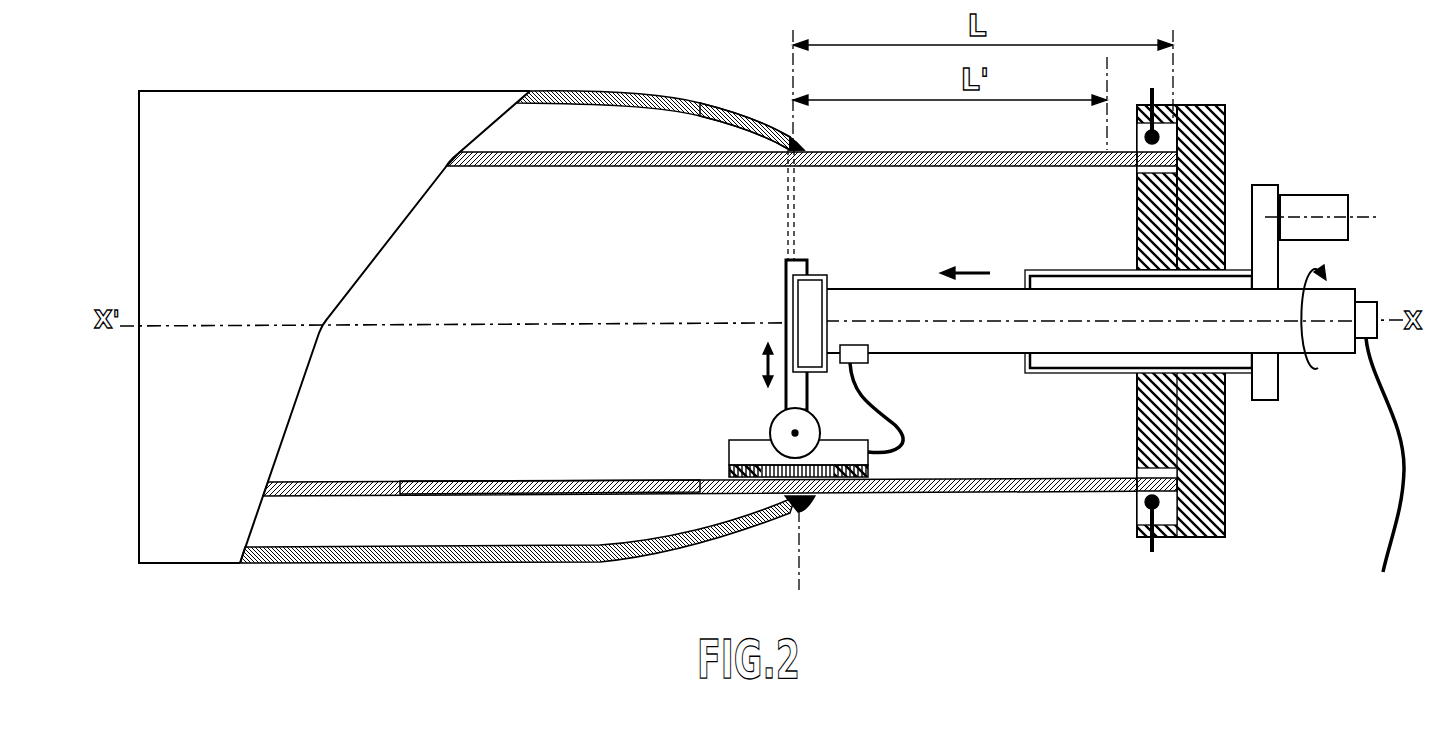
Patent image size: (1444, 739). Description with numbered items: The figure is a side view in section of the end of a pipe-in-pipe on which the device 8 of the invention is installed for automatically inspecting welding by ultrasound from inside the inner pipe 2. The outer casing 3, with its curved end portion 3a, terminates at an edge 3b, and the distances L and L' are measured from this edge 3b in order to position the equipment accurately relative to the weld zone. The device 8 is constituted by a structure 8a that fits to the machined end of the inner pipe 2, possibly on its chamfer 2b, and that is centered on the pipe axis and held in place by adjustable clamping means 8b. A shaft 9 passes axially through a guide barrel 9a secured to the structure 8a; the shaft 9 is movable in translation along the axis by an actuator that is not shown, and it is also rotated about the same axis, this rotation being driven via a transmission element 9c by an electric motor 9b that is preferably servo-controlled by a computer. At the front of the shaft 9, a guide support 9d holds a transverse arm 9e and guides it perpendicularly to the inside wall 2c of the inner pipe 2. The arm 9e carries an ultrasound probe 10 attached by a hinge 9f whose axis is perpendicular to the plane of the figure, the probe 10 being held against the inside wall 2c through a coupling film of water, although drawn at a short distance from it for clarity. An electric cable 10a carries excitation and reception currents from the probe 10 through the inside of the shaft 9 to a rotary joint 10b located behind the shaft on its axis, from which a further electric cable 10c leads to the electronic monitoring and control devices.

The inner pipe 2 is at (945, 493).
The chamfer 2b is at (1208, 106).
The inside wall 2c is at (508, 481).
The outer casing 3 is at (594, 88).
The nose cone skin portion 3a is at (733, 108).
The edge at the end of the outer casing 3b is at (800, 135).
The device 8 is at (1230, 106).
The structure 8a is at (1228, 120).
The adjustable clamping means 8b is at (1145, 90).
The shaft 9 is at (889, 298).
The guide barrel 9a is at (1072, 270).
The electric motor 9b is at (1350, 206).
The transmission element 9c is at (1267, 185).
The guide support 9d is at (816, 275).
The transverse arm 9e is at (785, 288).
The hinge 9f is at (781, 428).
The ultrasound probe 10 is at (729, 448).
The electric cable 10a is at (890, 422).
The rotary joint 10b is at (1369, 303).
The electric cable 10c is at (1398, 492).